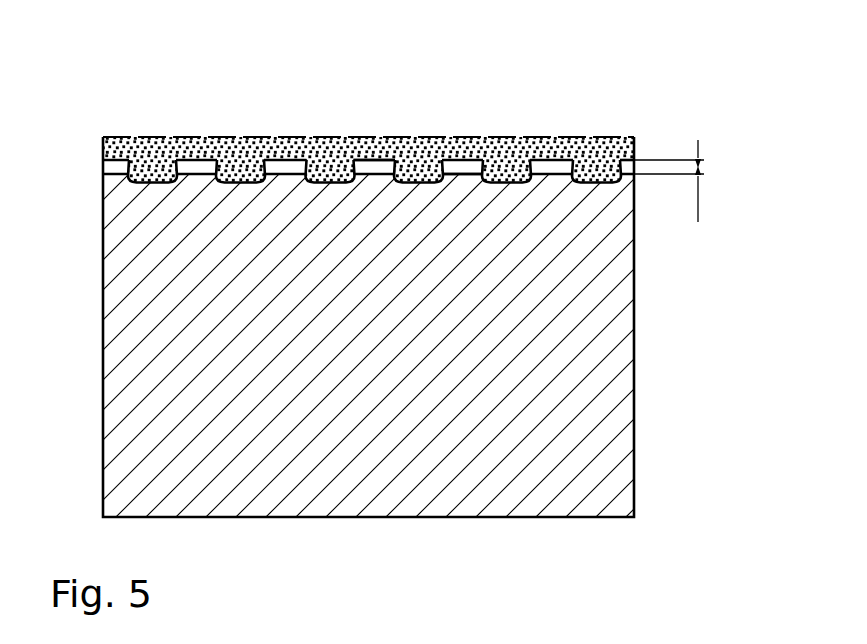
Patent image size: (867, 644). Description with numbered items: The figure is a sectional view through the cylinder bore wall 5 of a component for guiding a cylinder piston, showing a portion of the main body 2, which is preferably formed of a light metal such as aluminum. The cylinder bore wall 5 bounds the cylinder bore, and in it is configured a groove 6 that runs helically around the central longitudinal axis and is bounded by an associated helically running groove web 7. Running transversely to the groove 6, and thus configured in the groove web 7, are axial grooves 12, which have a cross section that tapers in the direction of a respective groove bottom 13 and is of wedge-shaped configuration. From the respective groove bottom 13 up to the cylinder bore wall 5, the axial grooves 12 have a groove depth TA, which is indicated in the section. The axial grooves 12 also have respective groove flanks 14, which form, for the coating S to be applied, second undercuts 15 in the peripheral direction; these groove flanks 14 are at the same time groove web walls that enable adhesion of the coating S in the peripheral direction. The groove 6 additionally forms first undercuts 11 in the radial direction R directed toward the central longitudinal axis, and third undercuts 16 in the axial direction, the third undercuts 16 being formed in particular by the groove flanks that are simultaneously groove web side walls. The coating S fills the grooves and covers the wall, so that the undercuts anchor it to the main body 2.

The main body 2 is at (622, 385).
The cylinder bore wall 5 is at (624, 167).
The groove 6 is at (566, 155).
The groove web 7 is at (300, 158).
The first undercuts 11 is at (219, 176).
The axial grooves 12 is at (392, 154).
The groove bottom 13 is at (456, 172).
The groove flanks 14 is at (377, 165).
The second undercuts 15 is at (517, 165).
The third undercuts 16 is at (176, 180).
The radial direction R is at (197, 160).
The coating S is at (635, 160).
The groove depth TA is at (686, 181).